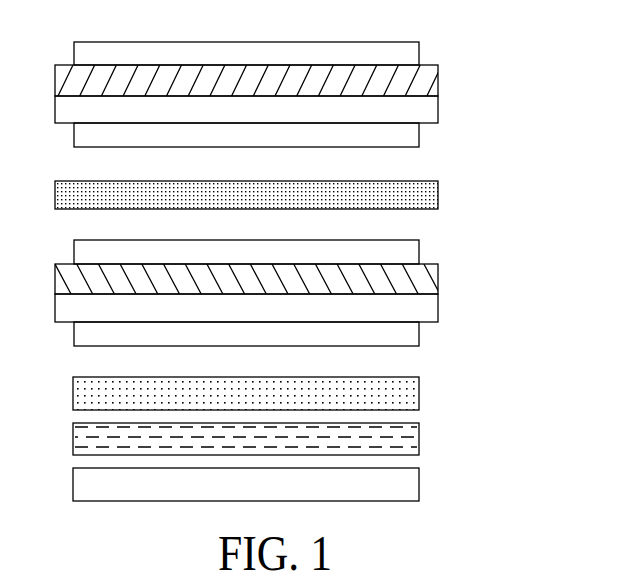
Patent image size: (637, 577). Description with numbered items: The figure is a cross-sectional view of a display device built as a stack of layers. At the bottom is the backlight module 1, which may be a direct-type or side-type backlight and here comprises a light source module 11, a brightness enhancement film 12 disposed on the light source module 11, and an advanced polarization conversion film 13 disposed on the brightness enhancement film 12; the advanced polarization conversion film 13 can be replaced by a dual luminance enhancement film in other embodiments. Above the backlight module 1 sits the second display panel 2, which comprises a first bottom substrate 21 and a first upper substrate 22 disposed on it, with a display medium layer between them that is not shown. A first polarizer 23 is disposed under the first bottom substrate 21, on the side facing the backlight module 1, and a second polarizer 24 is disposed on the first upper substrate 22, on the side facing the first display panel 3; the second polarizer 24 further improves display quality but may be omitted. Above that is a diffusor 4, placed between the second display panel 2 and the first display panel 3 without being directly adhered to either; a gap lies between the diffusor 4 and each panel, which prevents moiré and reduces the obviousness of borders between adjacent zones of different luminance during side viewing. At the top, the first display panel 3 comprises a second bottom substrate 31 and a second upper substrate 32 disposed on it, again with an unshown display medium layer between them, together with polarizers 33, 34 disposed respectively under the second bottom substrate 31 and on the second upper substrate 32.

The backlight module 1 is at (302, 446).
The light source module 11 is at (285, 486).
The brightness enhancement film 12 is at (414, 440).
The advanced polarization conversion film 13 is at (414, 392).
The second display panel 2 is at (283, 291).
The first bottom substrate 21 is at (434, 308).
The first upper substrate 22 is at (434, 278).
The first polarizer 23 is at (286, 341).
The second polarizer 24 is at (414, 251).
The first display panel 3 is at (284, 94).
The second bottom substrate 31 is at (434, 110).
The second upper substrate 32 is at (434, 80).
The polarizer 33 is at (286, 141).
The polarizer 34 is at (414, 53).
The diffusor 4 is at (434, 189).